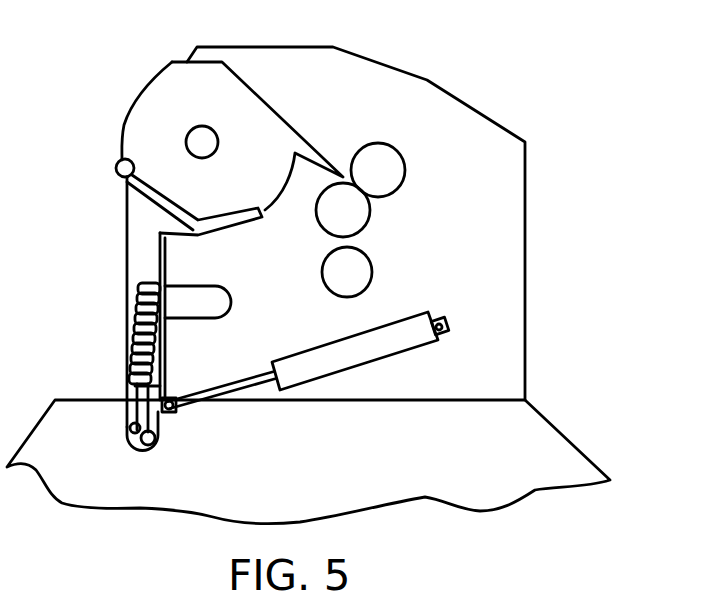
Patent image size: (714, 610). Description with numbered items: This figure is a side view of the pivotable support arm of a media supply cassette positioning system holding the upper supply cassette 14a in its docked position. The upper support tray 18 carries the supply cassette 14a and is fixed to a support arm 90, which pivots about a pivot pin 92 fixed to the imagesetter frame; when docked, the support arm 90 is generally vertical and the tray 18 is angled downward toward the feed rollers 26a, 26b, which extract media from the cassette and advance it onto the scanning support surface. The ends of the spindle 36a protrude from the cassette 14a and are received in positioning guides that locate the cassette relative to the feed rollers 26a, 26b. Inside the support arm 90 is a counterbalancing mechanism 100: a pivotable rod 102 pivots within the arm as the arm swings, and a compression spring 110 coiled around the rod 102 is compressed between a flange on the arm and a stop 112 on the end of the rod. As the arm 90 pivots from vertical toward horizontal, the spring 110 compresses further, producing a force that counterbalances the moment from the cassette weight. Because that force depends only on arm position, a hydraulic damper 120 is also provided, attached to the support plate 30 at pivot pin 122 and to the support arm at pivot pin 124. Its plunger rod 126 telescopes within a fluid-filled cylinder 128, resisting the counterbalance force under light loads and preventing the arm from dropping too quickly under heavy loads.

The supply cassette 14a is at (155, 73).
The upper support tray 18 is at (127, 188).
The feed roller 26a is at (406, 170).
The feed roller 26b is at (371, 207).
The support plate 30 is at (527, 262).
The spindle 36a is at (186, 142).
The support arm 90 is at (128, 252).
The pivot pin 92 is at (140, 450).
The counterbalancing mechanism 100 is at (258, 325).
The pivotable rod 102 is at (128, 400).
The compression spring 110 is at (140, 316).
The stop 112 is at (143, 287).
The hydraulic damper 120 is at (383, 358).
The pivot pin 122 is at (450, 322).
The pivot pin 124 is at (176, 412).
The plunger rod 126 is at (263, 386).
The cylinder 128 is at (385, 322).